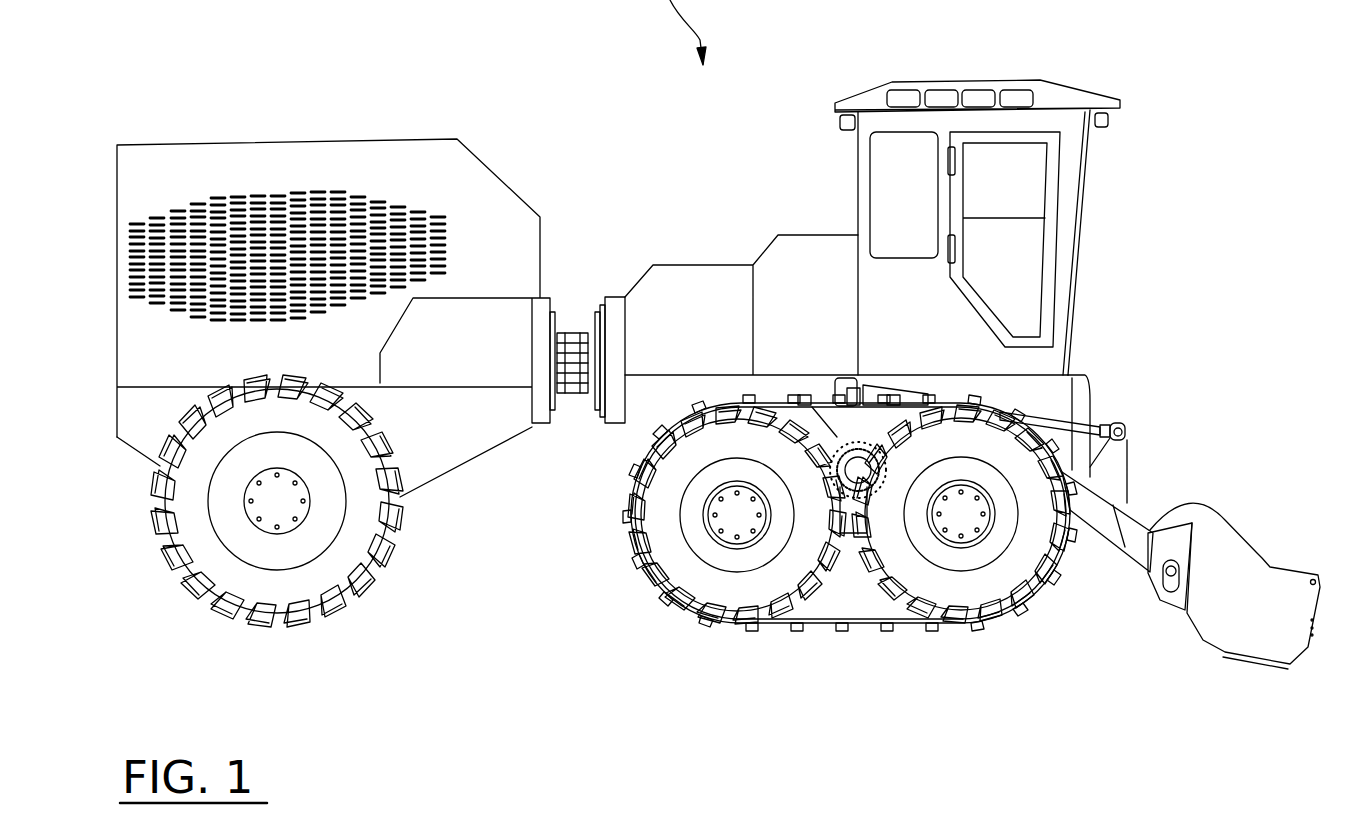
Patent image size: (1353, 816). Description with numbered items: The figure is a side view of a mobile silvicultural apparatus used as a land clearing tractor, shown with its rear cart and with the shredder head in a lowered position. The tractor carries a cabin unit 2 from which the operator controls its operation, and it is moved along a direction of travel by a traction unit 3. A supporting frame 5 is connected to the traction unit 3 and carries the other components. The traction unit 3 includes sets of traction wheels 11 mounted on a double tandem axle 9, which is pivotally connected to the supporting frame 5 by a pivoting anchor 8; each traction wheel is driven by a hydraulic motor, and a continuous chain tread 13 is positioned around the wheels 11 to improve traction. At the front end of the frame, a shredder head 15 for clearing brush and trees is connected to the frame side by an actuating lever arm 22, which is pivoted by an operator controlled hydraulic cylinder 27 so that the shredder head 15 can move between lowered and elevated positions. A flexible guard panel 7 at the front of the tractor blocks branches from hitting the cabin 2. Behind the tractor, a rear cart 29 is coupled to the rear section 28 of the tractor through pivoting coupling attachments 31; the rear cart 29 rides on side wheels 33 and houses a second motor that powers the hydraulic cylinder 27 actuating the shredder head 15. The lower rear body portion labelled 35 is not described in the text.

The cabin unit 2 is at (1087, 198).
The traction unit 3 is at (712, 635).
The supporting frame 5 is at (632, 425).
The flexible guard panel 7 is at (1073, 397).
The pivoting anchor 8 is at (835, 437).
The double tandem axle 9 is at (847, 535).
The traction wheels 11 is at (650, 563).
The continuous chain tread 13 is at (910, 632).
The shredder heads 15 is at (1210, 650).
The actuating lever arm 22 is at (1123, 545).
The hydraulic cylinder 27 is at (880, 380).
The rear section 28 is at (593, 327).
The rear cart 29 is at (360, 160).
The pivoting coupling attachments 31 is at (570, 330).
The side wheels 33 is at (343, 593).
The rear frame section 35 is at (425, 488).